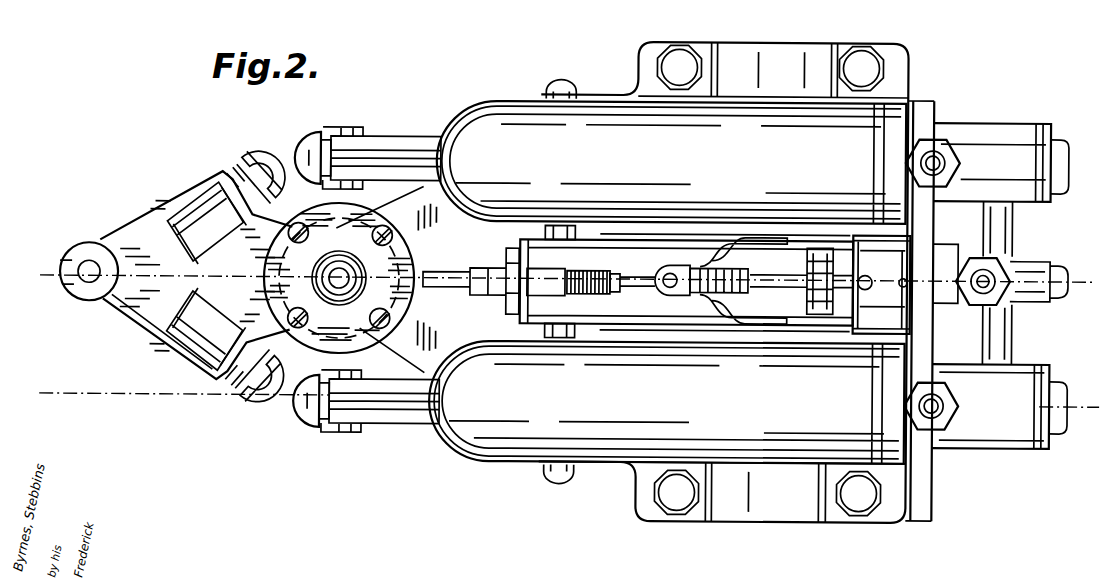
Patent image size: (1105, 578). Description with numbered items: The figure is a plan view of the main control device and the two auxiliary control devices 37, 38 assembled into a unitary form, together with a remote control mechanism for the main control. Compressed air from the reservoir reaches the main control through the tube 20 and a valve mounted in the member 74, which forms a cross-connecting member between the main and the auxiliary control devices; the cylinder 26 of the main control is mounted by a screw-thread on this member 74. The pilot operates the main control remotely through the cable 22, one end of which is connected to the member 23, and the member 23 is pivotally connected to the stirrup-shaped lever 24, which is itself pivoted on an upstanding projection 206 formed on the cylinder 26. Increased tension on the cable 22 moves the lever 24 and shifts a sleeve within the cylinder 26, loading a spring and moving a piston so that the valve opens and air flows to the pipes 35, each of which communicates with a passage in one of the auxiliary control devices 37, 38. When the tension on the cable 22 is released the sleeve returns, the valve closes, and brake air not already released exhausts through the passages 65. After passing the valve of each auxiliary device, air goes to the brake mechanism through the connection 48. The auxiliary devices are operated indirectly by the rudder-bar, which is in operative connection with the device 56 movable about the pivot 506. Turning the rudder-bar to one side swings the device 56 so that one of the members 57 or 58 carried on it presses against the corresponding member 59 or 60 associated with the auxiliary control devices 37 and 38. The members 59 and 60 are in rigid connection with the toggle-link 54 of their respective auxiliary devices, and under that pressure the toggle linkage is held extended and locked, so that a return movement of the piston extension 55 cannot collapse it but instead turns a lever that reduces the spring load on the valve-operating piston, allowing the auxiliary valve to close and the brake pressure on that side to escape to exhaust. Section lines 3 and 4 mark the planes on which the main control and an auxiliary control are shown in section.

The section line 3- 3 is at (47, 250).
The section line 4- 4 is at (47, 370).
The tube 20 is at (982, 293).
The cable 22 is at (424, 275).
The member 23 is at (670, 295).
The stirrup-shaped lever 24 is at (878, 372).
The cylinder 26 is at (612, 283).
The pipes 35 is at (1012, 345).
The auxiliary control device 37 is at (474, 106).
The auxiliary control device 38 is at (480, 348).
The connection 48 is at (928, 403).
The toggle-link 54 is at (389, 403).
The piston extension 55 is at (383, 383).
The device 56 is at (102, 292).
The member 57 is at (253, 157).
The member 58 is at (250, 398).
The member 59 is at (313, 147).
The member 60 is at (296, 400).
The passages 65 is at (902, 279).
The member 74 is at (1018, 273).
The upstanding projection 206 is at (746, 283).
The pivot 506 is at (350, 270).